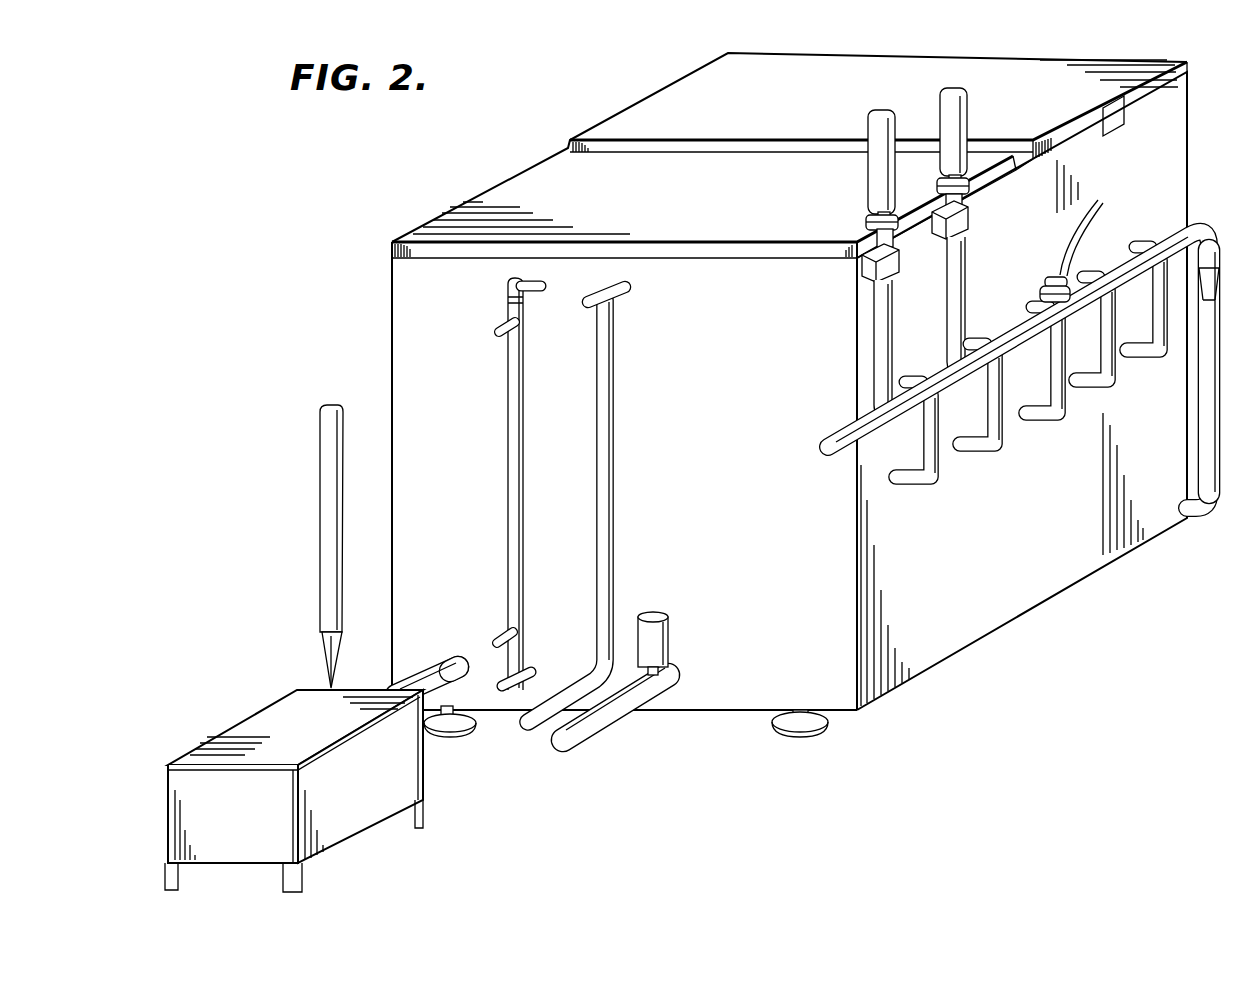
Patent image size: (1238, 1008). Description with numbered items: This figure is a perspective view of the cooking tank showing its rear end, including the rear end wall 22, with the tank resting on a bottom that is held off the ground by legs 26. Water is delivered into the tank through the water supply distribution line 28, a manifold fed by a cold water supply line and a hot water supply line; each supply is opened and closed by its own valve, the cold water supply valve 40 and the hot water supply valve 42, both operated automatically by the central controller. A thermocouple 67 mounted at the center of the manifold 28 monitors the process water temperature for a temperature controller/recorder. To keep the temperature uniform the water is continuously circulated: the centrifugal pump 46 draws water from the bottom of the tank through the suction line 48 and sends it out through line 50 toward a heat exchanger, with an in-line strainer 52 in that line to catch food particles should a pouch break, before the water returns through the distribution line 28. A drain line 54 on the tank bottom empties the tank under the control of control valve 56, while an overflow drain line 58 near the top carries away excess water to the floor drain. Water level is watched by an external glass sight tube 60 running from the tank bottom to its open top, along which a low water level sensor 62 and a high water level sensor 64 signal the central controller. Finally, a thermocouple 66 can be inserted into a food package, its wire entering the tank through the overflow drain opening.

The rear end wall 22 is at (415, 363).
The legs 26 is at (833, 723).
The water supply distribution line 28 is at (1020, 337).
The cold water supply valve 40 is at (966, 232).
The hot water supply valve 42 is at (863, 277).
The centrifugal pump 46 is at (350, 802).
The suction line 48 is at (463, 686).
The line 50 is at (323, 682).
The in-line strainer 52 is at (323, 645).
The drain line 54 is at (661, 695).
The control valve 56 is at (668, 640).
The overflow drain line 58 is at (623, 504).
The external glass sight tube 60 is at (482, 484).
The low water level sensor 62 is at (495, 640).
The high water level sensor 64 is at (497, 332).
The thermocouple 66 is at (623, 290).
The thermocouple 67 is at (1077, 258).